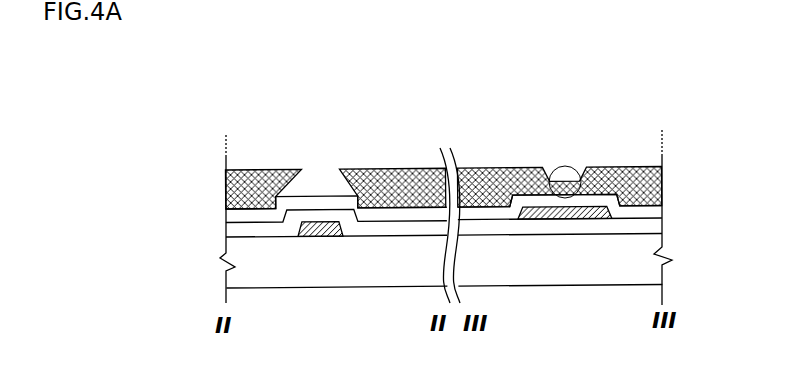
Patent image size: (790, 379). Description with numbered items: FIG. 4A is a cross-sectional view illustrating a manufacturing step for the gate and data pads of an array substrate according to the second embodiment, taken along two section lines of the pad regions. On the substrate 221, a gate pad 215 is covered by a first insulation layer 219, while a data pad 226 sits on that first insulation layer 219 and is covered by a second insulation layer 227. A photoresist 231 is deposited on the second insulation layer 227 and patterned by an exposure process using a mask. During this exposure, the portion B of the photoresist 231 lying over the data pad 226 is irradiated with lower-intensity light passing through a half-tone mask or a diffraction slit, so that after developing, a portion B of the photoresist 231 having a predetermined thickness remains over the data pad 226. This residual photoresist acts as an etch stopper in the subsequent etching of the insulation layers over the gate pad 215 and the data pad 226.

The gate pad 215 is at (326, 237).
The first insulation layer 219 is at (312, 210).
The substrate 221 is at (518, 274).
The data pad 226 is at (584, 221).
The second insulation layer 227 is at (354, 196).
The photoresist 231 is at (257, 170).
The portion "B" of the photoresist B is at (566, 165).